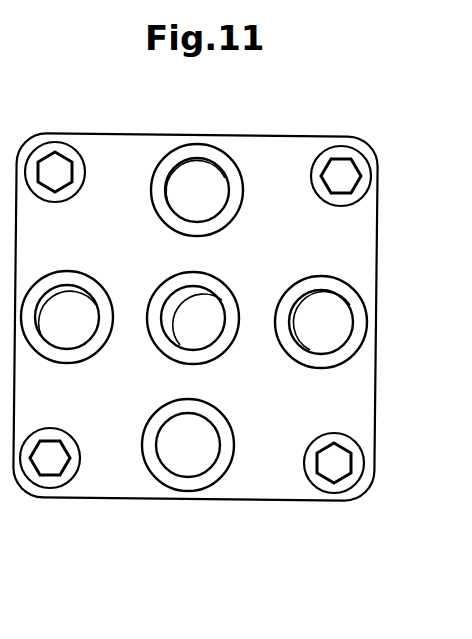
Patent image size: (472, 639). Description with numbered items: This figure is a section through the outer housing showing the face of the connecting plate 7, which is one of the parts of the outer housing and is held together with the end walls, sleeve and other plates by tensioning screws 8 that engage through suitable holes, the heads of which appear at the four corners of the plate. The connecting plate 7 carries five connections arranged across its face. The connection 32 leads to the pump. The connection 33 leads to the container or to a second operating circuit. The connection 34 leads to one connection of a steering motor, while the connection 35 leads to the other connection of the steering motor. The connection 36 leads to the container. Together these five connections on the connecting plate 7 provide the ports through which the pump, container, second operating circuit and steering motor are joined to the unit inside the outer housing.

The connecting plate 7 is at (286, 150).
The tensioning screw 8 is at (339, 173).
The connection 32 is at (170, 180).
The connection 33 is at (62, 337).
The connection 34 is at (185, 468).
The connection 35 is at (334, 300).
The connection 36 is at (207, 303).